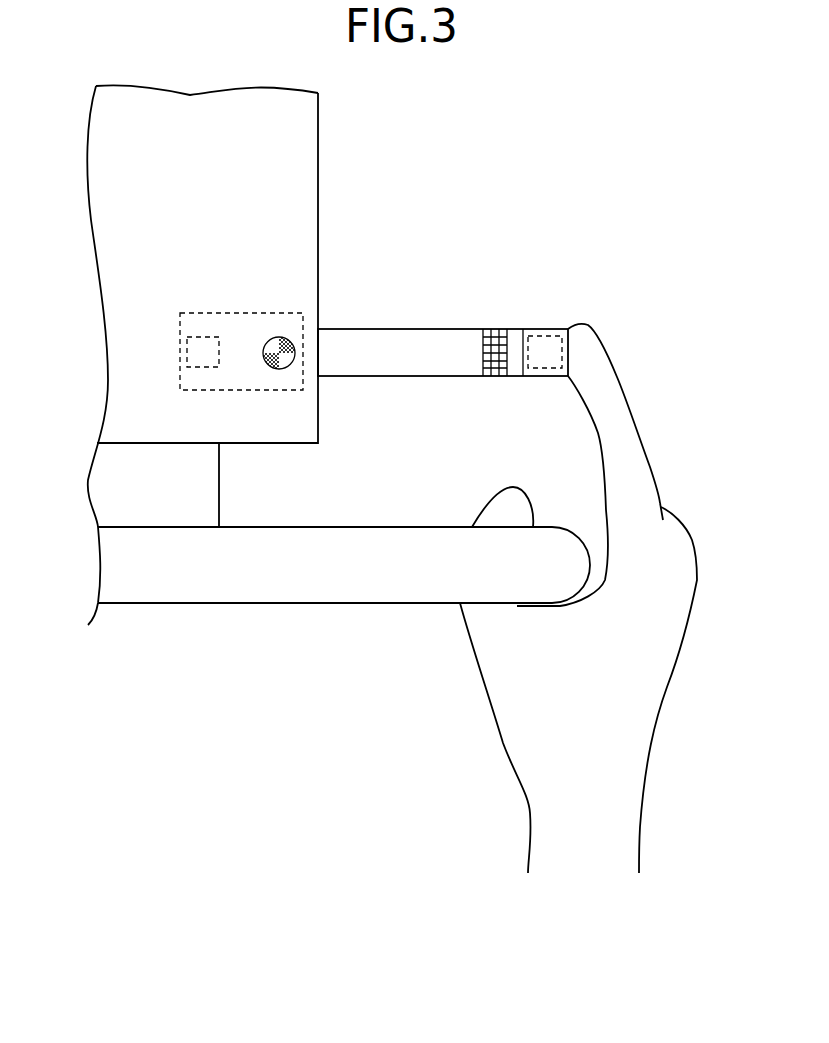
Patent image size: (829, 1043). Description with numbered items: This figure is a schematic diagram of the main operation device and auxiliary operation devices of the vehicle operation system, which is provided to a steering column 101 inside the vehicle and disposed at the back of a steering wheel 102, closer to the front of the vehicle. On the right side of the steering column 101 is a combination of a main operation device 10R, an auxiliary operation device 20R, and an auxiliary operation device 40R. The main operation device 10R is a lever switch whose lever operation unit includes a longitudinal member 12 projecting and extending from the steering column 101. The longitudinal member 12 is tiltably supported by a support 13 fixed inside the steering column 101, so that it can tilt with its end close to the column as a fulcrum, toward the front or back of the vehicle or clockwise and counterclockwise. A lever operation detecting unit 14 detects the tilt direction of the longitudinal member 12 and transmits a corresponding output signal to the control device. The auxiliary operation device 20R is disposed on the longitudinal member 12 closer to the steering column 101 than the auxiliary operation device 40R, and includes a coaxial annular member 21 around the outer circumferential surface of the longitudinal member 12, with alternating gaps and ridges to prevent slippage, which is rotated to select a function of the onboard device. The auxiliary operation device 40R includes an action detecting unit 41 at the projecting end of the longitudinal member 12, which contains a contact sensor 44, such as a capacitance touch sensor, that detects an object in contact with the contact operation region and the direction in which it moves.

The steering column 101 is at (320, 112).
The steering wheel 102 is at (317, 603).
The support 13 is at (272, 390).
The lever operation detecting unit 14 is at (208, 367).
The main operation device 10R is at (443, 283).
The longitudinal member 12 is at (445, 329).
The auxiliary operation device 20R is at (492, 323).
The annular member 21 is at (495, 376).
The auxiliary operation device 40R is at (613, 339).
The action detecting unit 41 is at (540, 329).
The contact sensor 44 is at (538, 368).